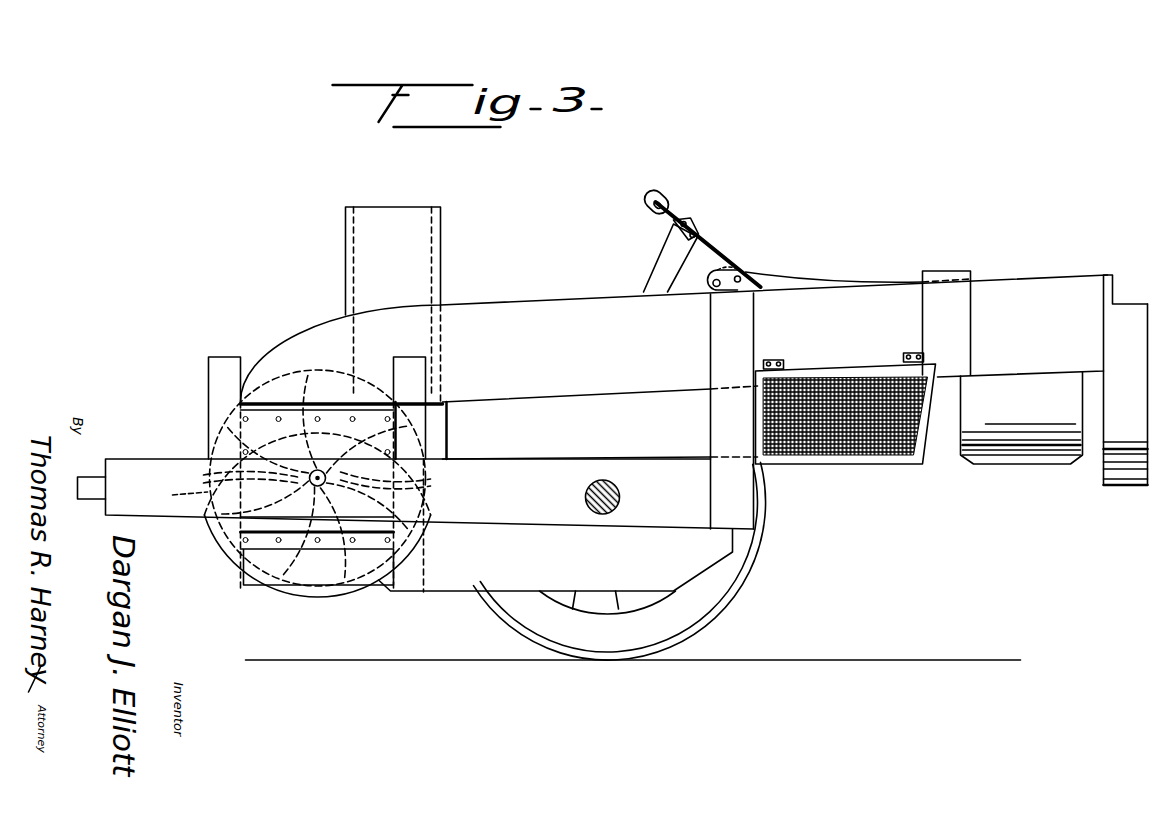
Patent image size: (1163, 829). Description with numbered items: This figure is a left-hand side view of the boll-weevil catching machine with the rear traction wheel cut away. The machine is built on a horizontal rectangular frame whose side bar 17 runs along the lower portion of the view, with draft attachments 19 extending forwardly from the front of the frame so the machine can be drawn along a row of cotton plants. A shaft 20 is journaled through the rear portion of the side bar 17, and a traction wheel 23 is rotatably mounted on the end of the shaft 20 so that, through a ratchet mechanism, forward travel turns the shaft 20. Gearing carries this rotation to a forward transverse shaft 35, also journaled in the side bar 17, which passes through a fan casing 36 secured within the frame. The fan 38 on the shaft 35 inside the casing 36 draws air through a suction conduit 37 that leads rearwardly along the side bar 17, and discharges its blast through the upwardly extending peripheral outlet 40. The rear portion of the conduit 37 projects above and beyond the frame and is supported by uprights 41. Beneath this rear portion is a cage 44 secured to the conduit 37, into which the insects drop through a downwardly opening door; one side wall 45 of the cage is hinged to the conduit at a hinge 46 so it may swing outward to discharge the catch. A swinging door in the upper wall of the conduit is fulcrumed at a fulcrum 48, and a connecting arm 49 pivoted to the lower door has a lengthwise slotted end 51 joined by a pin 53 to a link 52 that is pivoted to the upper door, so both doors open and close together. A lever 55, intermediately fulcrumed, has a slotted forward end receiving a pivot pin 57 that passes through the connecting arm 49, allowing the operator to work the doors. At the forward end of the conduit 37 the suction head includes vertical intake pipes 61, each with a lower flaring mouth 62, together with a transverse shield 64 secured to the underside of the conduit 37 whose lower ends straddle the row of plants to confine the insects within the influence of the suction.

The side bar 17 is at (163, 460).
The draft attachments 19 is at (86, 480).
The shaft 20 is at (620, 495).
The wheel 23 is at (740, 583).
The forward transverse shaft 35 is at (333, 475).
The fan casing 36 is at (322, 600).
The suction conduit 37 is at (658, 433).
The fan 38 is at (176, 500).
The peripheral outlet 40 is at (443, 267).
The uprights 41 is at (722, 418).
The cage 44 is at (825, 465).
The side wall 45 is at (872, 457).
The hinge 46 is at (913, 350).
The fulcrum 48 is at (778, 356).
The connecting arm 49 is at (720, 253).
The slotted end 51 is at (670, 197).
The link 52 is at (661, 266).
The pin 53 is at (700, 220).
The lever 55 is at (818, 277).
The pivot pin 57 is at (746, 270).
The vertical intake pipes 61 is at (1126, 394).
The flaring mouth 62 is at (1123, 487).
The transverse shield 64 is at (1023, 453).